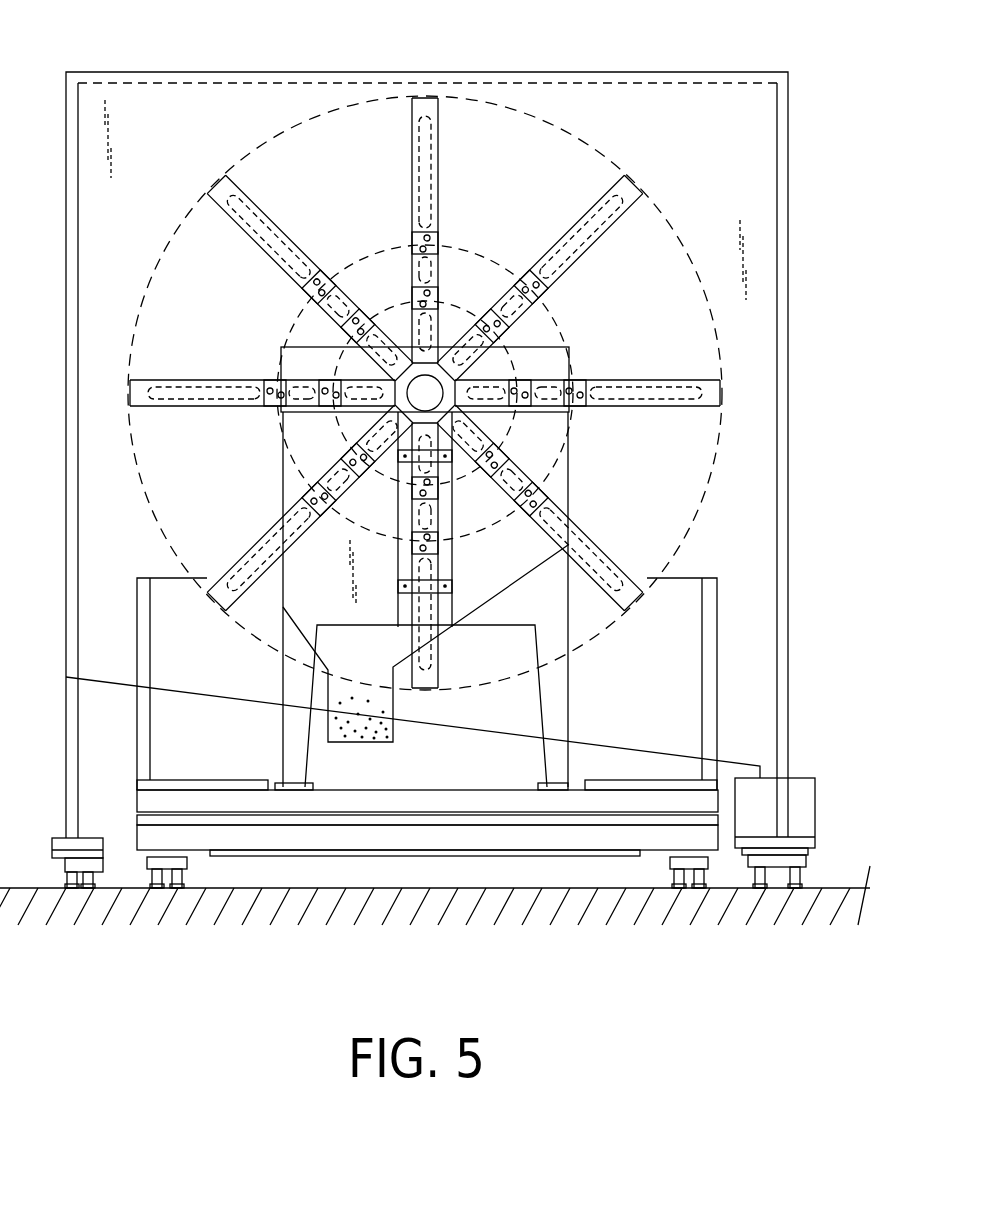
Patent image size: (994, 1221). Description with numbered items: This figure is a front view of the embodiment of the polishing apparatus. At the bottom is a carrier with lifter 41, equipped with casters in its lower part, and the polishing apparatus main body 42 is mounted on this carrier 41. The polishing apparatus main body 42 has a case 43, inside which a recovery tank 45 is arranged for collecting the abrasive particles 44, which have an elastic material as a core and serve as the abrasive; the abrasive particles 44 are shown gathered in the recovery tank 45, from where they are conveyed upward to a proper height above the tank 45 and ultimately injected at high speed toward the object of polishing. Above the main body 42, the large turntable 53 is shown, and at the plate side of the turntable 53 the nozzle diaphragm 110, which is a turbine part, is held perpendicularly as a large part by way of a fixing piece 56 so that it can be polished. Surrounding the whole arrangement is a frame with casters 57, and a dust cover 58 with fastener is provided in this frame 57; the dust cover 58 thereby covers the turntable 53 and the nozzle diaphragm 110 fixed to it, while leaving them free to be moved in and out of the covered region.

The dust cover 58 is at (192, 110).
The turntable 53 is at (468, 127).
The fixing piece 56 is at (547, 290).
The nozzle diaphragm 110 is at (565, 327).
The polishing apparatus main body 42 is at (320, 550).
The case 43 is at (717, 662).
The recovery tank 45 is at (395, 703).
The abrasive particles 44 is at (367, 733).
The carrier with lifter 41 is at (615, 852).
The frame with casters 57 is at (793, 857).